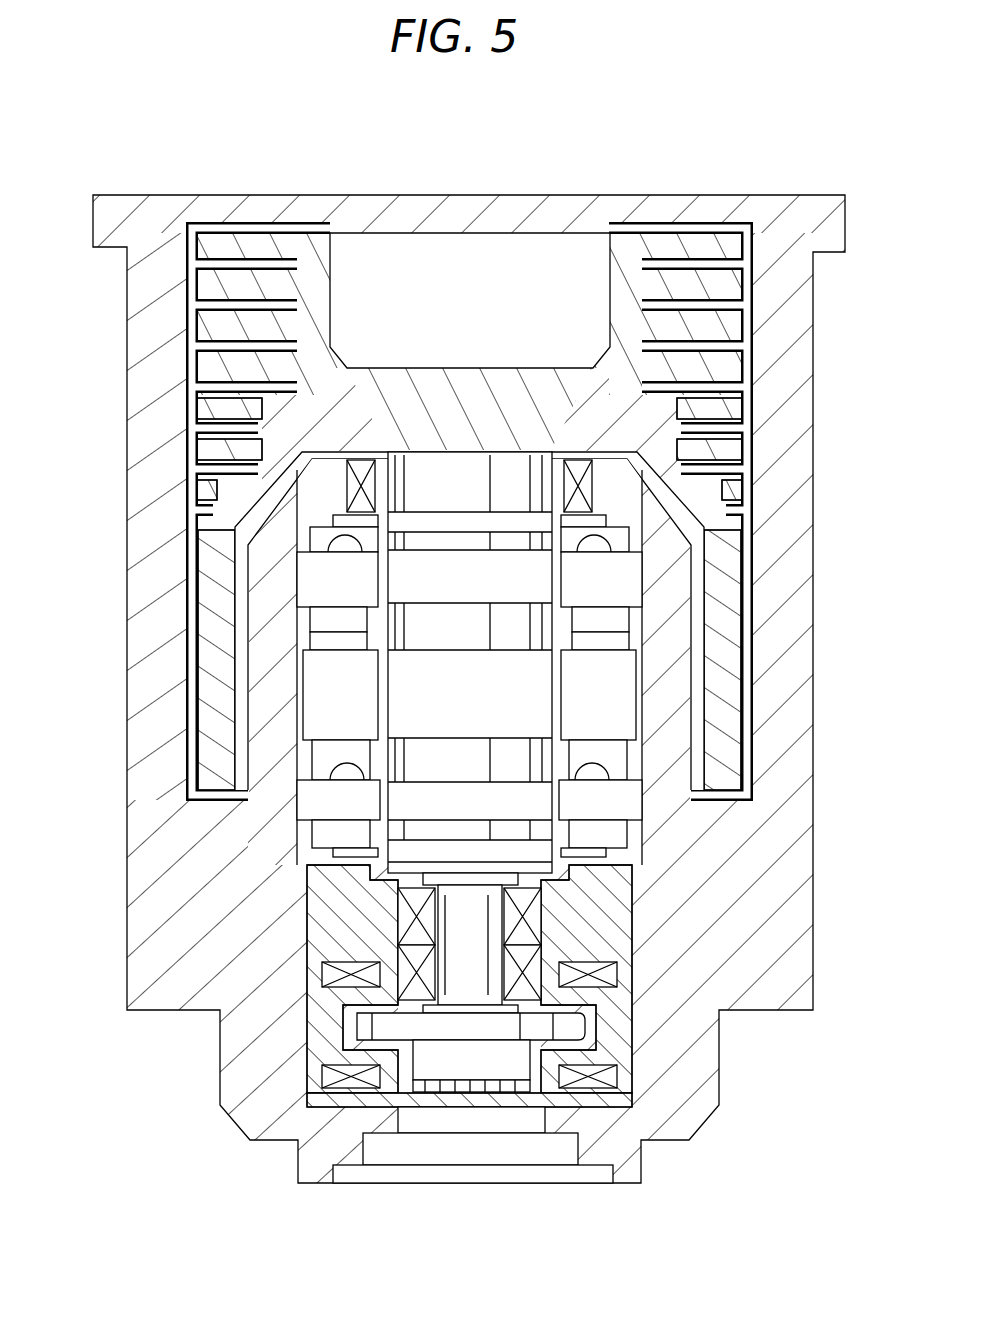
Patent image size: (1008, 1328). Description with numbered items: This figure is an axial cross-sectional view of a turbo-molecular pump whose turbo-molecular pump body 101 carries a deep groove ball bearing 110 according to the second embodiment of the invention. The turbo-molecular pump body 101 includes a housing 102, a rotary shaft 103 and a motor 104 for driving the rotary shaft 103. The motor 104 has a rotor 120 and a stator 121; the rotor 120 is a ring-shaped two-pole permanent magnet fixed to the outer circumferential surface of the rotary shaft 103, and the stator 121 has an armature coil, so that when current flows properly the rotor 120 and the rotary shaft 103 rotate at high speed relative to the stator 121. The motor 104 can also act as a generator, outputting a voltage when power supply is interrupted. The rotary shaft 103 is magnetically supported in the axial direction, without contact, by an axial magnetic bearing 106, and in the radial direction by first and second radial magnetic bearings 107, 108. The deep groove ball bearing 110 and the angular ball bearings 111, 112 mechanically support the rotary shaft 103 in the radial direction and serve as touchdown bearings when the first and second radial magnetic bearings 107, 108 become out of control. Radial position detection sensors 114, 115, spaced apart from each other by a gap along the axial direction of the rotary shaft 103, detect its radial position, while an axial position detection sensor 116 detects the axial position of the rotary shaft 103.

The turbo-molecular pump body 101 is at (587, 188).
The housing 102 is at (785, 294).
The rotary shaft 103 is at (480, 618).
The motor 104 is at (310, 690).
The axial magnetic bearing 106 is at (307, 1078).
The first radial magnetic bearing 107 is at (320, 583).
The second radial magnetic bearing 108 is at (300, 800).
The deep groove ball bearing 110 is at (700, 520).
The angular ball bearing 111 is at (555, 923).
The angular ball bearing 112 is at (340, 975).
The radial position detection sensor 114 is at (340, 522).
The radial position detection sensor 115 is at (330, 855).
The axial position detection sensor 116 is at (448, 1112).
The rotor 120 is at (430, 720).
The stator 121 is at (330, 662).